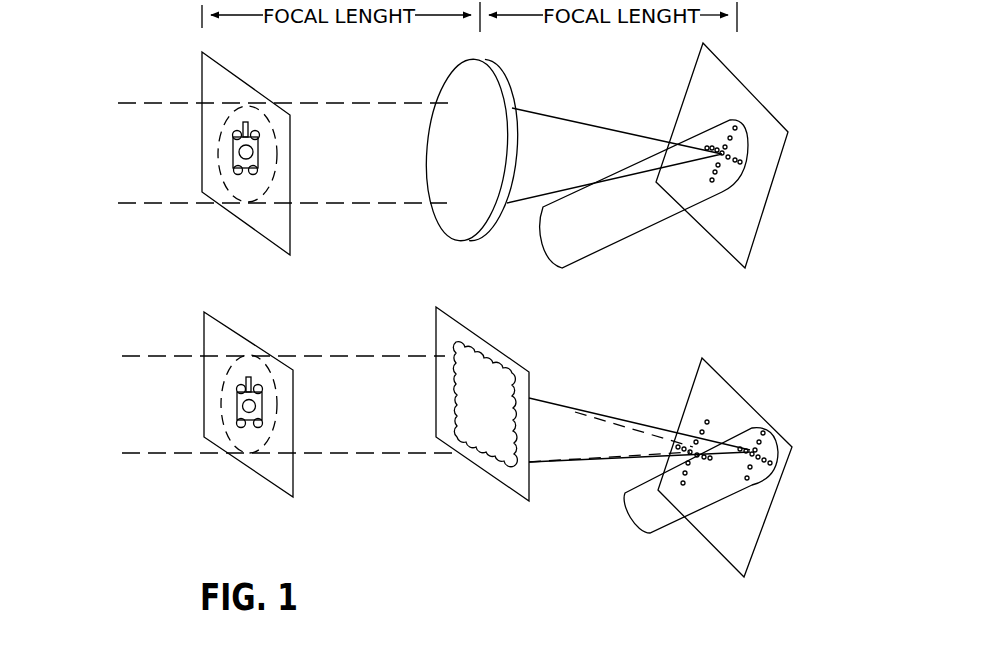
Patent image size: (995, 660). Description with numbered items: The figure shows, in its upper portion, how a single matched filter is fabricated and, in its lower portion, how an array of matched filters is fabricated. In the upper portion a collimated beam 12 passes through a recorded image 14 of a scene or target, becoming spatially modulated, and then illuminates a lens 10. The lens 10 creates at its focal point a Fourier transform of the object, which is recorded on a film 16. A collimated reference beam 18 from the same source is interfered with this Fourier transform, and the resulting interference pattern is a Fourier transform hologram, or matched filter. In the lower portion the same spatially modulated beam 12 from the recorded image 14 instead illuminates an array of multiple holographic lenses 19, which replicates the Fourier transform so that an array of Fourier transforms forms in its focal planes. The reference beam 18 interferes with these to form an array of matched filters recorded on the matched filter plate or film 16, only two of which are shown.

The lens 10 is at (518, 84).
The spatially modulated collimated beam 12 is at (170, 403).
The recorded image 14 is at (233, 166).
The film 16 is at (762, 528).
The reference beam 18 is at (531, 237).
The array of multiple holographic lenses 19 is at (482, 338).